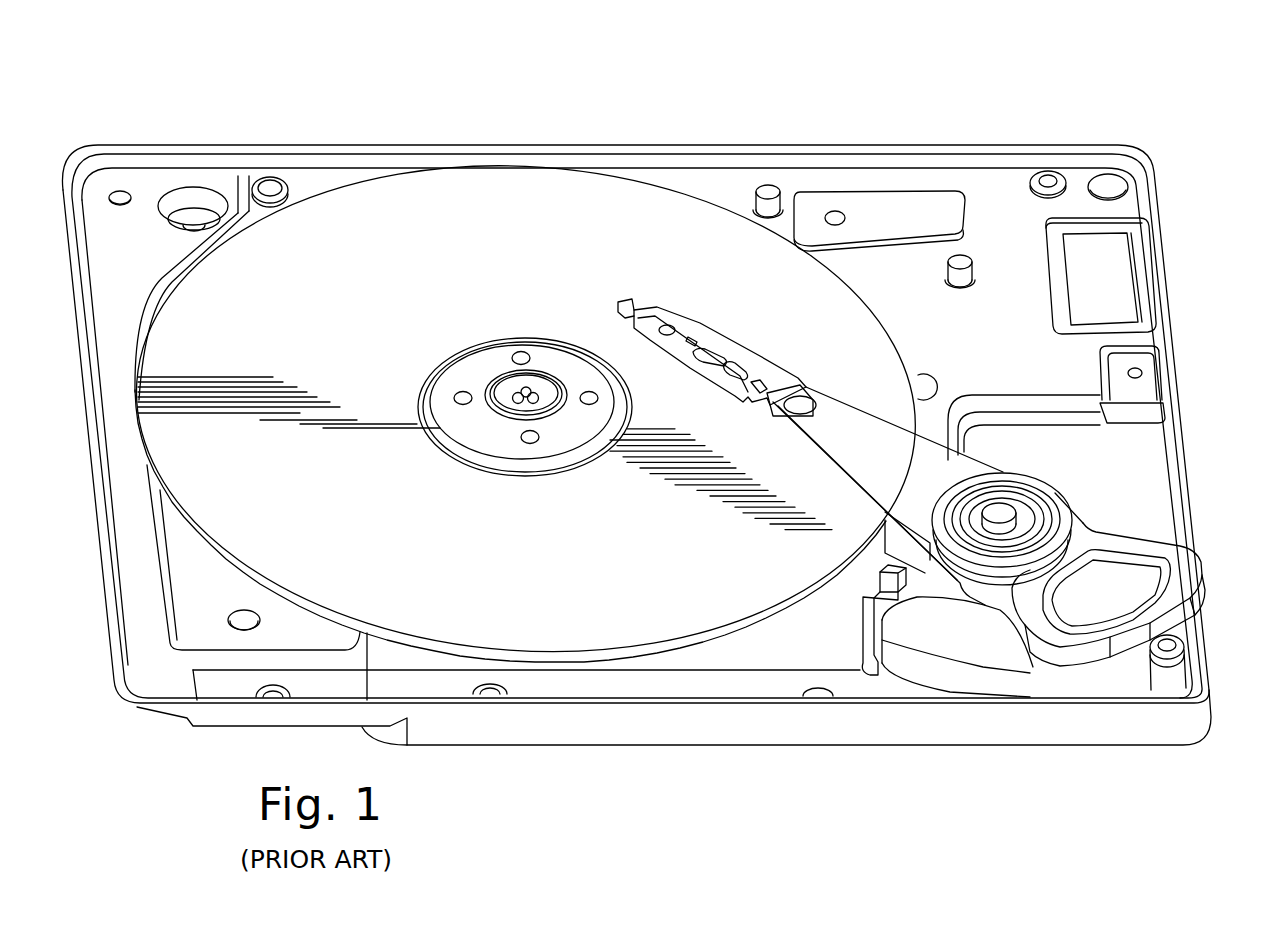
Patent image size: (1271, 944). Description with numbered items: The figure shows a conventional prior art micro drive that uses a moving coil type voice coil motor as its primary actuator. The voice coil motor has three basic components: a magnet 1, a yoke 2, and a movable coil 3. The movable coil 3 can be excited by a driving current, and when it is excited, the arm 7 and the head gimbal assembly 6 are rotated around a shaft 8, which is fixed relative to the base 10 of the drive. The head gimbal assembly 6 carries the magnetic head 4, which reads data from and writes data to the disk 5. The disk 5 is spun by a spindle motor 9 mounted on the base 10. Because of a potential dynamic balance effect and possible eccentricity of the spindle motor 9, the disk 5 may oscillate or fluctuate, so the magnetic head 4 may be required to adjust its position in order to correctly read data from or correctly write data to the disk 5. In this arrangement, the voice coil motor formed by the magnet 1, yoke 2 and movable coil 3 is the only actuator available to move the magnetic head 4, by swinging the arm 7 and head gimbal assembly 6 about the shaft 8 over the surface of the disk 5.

The magnet 1 is at (962, 648).
The yoke 2 is at (880, 677).
The movable coil 3 is at (1043, 627).
The magnetic head 4 is at (643, 313).
The disk 5 is at (516, 294).
The head gimbal assembly 6 is at (765, 363).
The arm 7 is at (862, 432).
The shaft 8 is at (1000, 515).
The spindle motor 9 is at (525, 392).
The base 10 is at (708, 733).